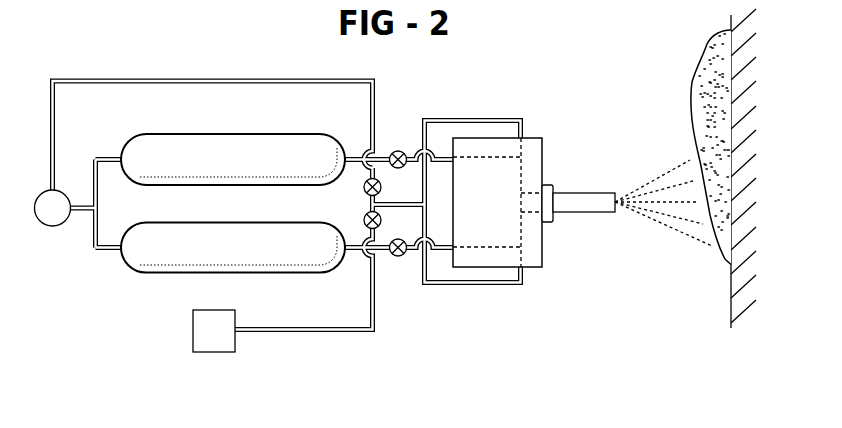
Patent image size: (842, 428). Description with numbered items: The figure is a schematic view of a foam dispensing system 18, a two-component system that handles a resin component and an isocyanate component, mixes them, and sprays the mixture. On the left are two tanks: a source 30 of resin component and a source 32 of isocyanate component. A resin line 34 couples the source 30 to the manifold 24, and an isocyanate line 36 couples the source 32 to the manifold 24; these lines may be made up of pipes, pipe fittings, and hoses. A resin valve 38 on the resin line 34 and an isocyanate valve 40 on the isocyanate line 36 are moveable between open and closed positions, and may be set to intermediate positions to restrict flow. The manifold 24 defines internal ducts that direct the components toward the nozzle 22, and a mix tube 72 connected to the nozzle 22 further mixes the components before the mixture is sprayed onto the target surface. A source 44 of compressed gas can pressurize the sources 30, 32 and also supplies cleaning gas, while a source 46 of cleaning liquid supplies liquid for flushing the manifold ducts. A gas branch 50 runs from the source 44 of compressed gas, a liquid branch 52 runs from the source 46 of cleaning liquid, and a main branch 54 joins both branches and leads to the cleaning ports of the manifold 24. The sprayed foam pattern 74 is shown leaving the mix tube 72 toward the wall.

The foam dispensing system 18 is at (250, 375).
The nozzle 22 is at (546, 185).
The manifold 24 is at (530, 138).
The source of resin component 30 is at (247, 147).
The source of isocyanate component 32 is at (247, 237).
The resin line 34 is at (440, 153).
The isocyanate line 36 is at (438, 253).
The resin valve 38 is at (399, 150).
The isocyanate valve 40 is at (398, 257).
The source of compressed gas 44 is at (52, 217).
The source of cleaning liquid 46 is at (200, 328).
The gas branch 50 is at (293, 79).
The liquid branch 52 is at (333, 333).
The main branch 54 is at (402, 200).
The mix tube 72 is at (580, 206).
The spray pattern 74 is at (461, 427).